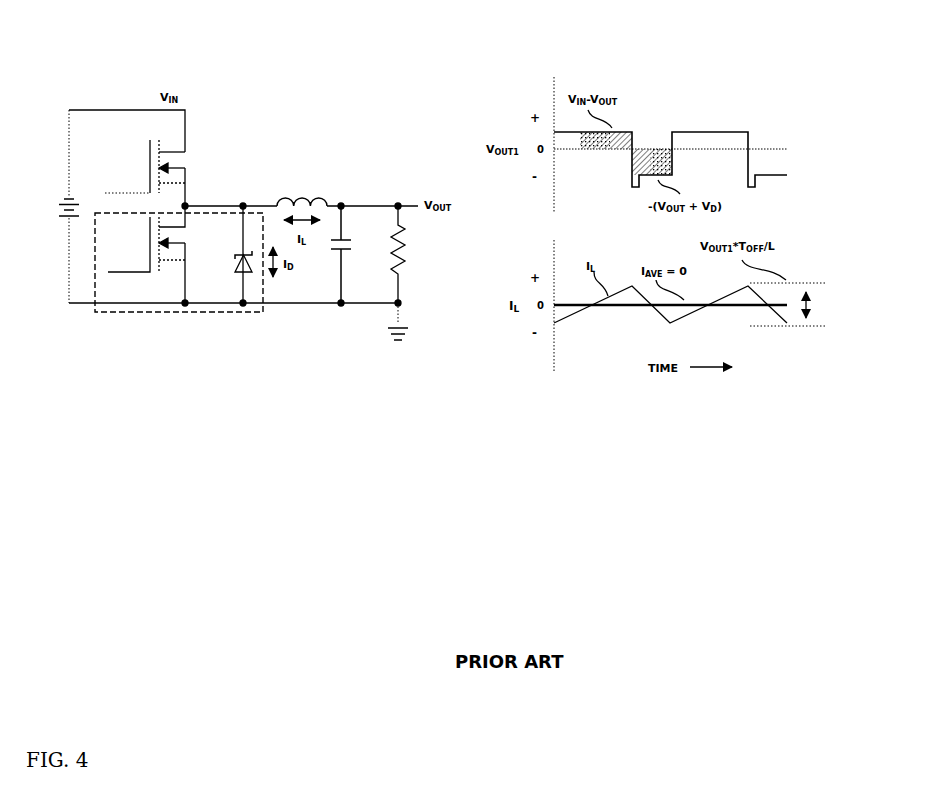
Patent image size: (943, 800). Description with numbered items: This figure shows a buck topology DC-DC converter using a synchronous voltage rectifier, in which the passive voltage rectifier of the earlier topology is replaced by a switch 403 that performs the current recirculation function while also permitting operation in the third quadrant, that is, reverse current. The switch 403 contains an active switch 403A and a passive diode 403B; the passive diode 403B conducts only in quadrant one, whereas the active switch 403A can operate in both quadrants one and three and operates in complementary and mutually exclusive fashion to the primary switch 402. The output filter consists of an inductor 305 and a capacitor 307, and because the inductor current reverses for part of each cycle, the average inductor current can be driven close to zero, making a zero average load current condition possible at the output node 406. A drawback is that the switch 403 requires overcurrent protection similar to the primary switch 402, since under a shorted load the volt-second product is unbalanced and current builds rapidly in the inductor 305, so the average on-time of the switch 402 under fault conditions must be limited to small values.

The switch 402 is at (144, 173).
The switch 403 is at (217, 322).
The active switch 403A is at (143, 254).
The passive diode 403B is at (224, 254).
The inductor 305 is at (302, 191).
The capacitor 307 is at (356, 254).
The node 406 is at (372, 197).